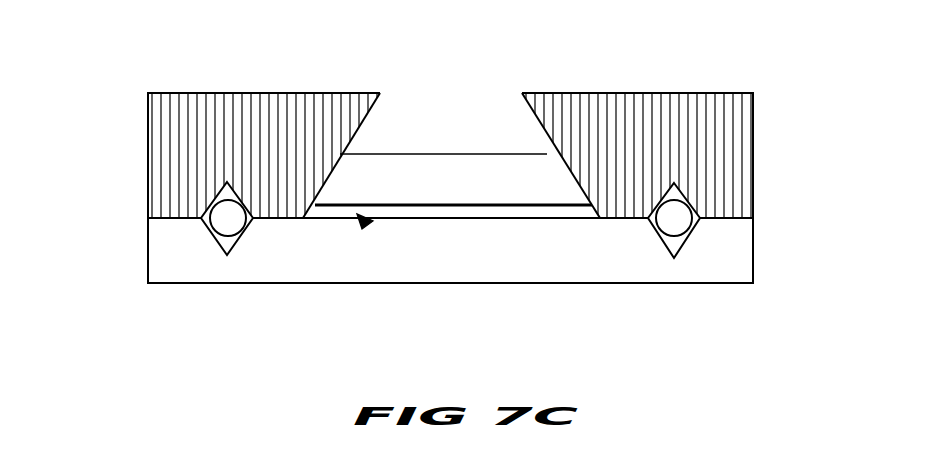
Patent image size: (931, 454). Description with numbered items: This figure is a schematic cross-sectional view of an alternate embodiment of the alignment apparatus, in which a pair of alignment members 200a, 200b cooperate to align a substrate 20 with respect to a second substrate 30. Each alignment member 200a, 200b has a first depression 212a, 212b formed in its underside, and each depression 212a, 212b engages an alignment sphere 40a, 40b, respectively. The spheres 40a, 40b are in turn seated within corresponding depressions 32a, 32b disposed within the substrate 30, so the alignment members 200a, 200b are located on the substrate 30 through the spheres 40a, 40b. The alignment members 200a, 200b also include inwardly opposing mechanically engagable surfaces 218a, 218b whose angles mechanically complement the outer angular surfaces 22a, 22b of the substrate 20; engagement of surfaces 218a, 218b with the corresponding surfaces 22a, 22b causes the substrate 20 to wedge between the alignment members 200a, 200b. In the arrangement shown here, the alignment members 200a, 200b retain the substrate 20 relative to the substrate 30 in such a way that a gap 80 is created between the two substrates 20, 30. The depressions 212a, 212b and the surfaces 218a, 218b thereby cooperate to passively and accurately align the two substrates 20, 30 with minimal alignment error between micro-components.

The alignment member 200a is at (270, 138).
The alignment member 200b is at (681, 138).
The depression 212a is at (160, 140).
The depression 212b is at (685, 197).
The mechanically engagable surface 218a is at (374, 111).
The mechanically engagable surface 218b is at (530, 110).
The outer angular surface 22a is at (340, 162).
The outer angular surface 22b is at (557, 160).
The substrate 20 is at (472, 197).
The substrate 30 is at (472, 258).
The depression 32a is at (230, 257).
The depression 32b is at (686, 256).
The alignment sphere 40a is at (207, 214).
The alignment sphere 40b is at (678, 227).
The gap 80 is at (370, 226).